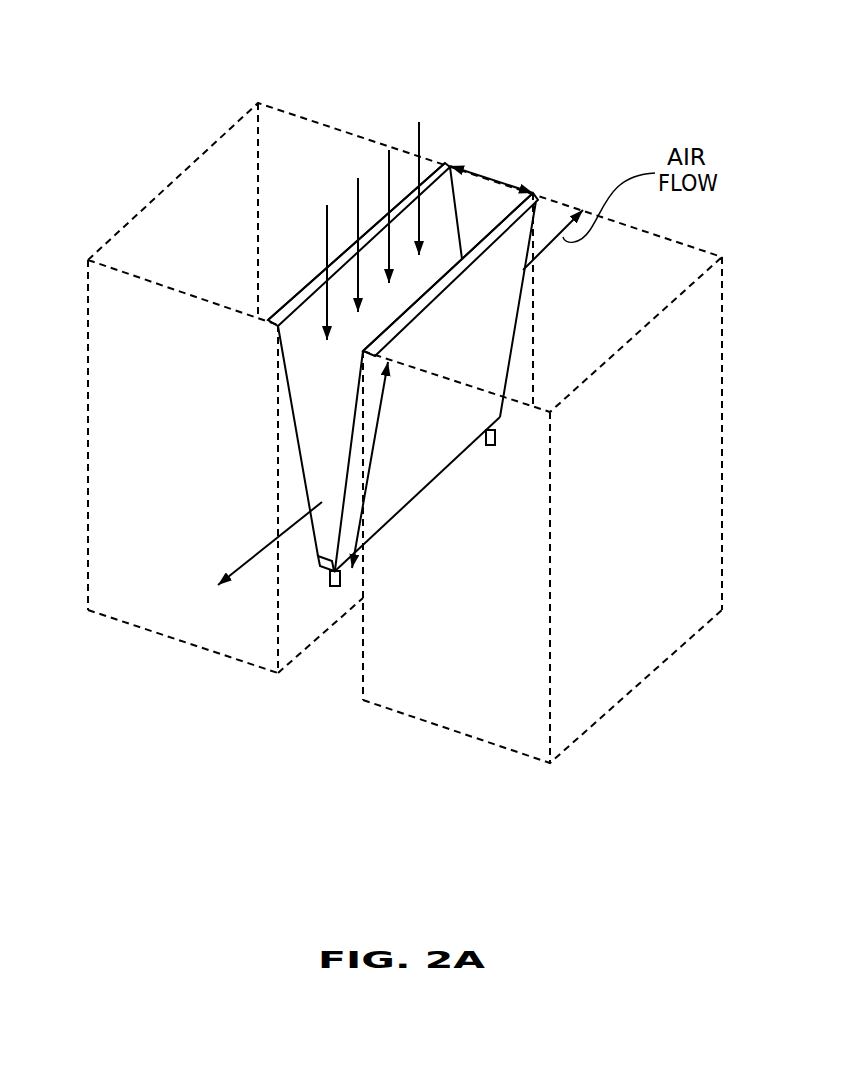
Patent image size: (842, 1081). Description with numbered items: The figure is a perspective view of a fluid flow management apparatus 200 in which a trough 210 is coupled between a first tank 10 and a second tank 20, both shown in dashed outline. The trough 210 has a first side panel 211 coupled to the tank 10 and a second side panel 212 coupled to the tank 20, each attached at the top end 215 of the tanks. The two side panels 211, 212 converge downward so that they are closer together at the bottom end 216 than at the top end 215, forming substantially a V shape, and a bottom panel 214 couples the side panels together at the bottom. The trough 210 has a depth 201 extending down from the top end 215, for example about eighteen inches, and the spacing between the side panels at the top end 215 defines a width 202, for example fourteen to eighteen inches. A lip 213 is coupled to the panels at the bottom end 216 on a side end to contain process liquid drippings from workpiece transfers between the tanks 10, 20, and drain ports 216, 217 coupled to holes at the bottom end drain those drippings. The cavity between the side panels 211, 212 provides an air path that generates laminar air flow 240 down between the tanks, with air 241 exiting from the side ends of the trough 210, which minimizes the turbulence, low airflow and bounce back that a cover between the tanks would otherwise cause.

The fluid flow management apparatus 200 is at (155, 102).
The tank 10 is at (128, 608).
The tank 20 is at (450, 713).
The trough 210 is at (315, 428).
The first side panel 211 is at (305, 355).
The second side panel 212 is at (493, 325).
The lip 213 is at (320, 568).
The bottom panel 214 is at (410, 498).
The top end 215 is at (500, 157).
The bottom end 216 is at (340, 586).
The drain port 217 is at (490, 446).
The depth 201 is at (378, 426).
The width 202 is at (482, 173).
The laminar air flow 240 is at (373, 214).
The air 241 is at (226, 551).